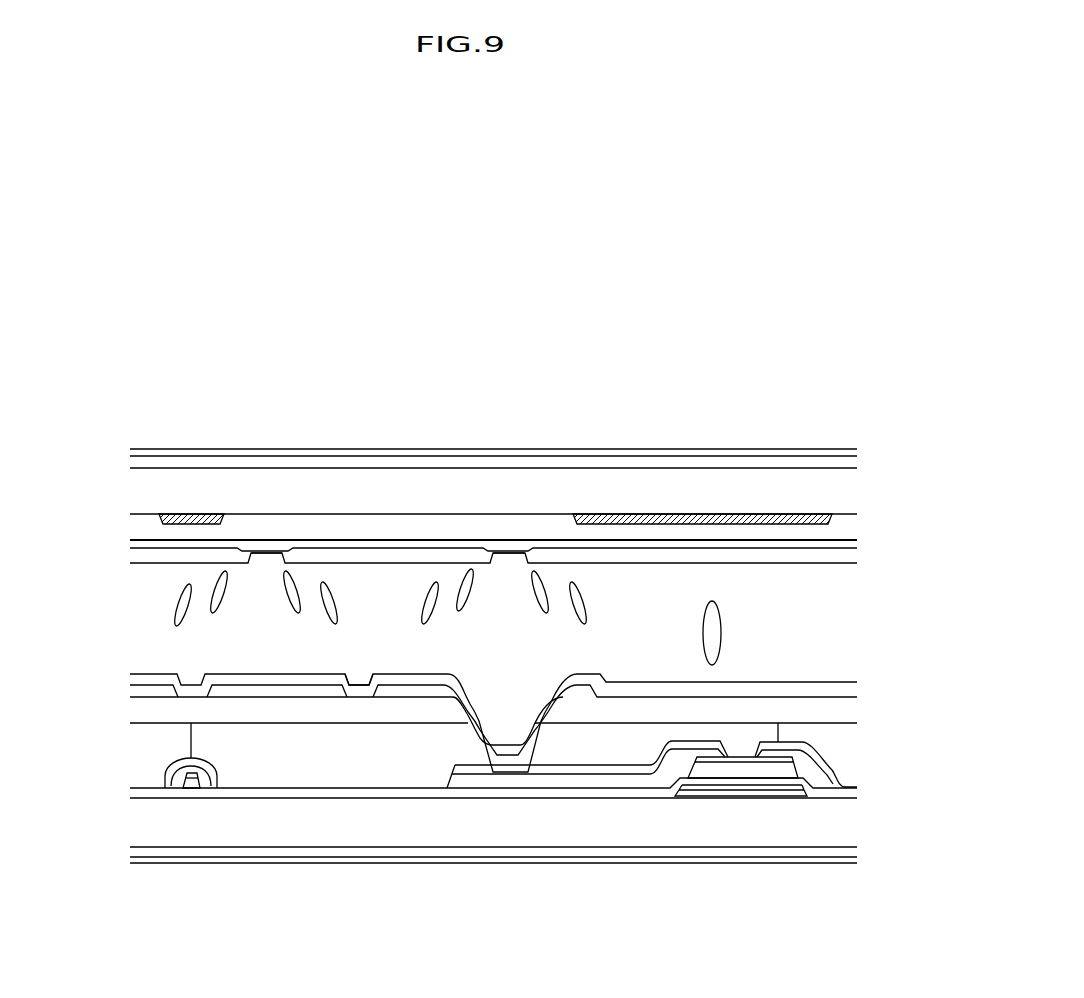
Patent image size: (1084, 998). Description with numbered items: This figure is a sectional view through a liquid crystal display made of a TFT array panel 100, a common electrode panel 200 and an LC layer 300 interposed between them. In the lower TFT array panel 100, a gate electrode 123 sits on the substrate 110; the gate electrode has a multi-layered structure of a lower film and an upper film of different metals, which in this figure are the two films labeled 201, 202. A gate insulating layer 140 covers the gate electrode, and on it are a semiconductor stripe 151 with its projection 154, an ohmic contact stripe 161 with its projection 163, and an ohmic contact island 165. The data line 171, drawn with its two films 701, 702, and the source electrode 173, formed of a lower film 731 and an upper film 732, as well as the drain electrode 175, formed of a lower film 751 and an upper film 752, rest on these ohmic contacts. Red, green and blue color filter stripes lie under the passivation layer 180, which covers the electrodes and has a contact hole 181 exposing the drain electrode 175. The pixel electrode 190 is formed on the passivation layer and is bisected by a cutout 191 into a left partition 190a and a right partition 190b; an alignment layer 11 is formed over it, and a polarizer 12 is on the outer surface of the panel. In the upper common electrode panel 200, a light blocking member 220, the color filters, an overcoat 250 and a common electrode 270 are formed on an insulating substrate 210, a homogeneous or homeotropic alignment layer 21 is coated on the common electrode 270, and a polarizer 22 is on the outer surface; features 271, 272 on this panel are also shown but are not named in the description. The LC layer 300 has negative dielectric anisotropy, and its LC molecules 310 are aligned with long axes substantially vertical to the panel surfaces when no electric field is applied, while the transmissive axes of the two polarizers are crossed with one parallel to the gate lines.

The alignment layer 11 is at (138, 682).
The polarizer 12 is at (808, 858).
The alignment layer 21 is at (138, 556).
The polarizer 22 is at (782, 452).
The TFT array panel 100 is at (504, 801).
The substrate 110 is at (313, 833).
The gate electrode 123 is at (741, 862).
The gate insulating layer 140 is at (345, 793).
The semiconductor stripe 151 is at (189, 783).
The projection 154 is at (720, 766).
The ohmic contact stripe 161 is at (198, 783).
The projection 163 is at (776, 760).
The ohmic contact island 165 is at (688, 779).
The data line 171 is at (183, 866).
The source electrode 173 is at (805, 709).
The drain electrode 175 is at (587, 709).
The passivation layer 180 is at (266, 783).
The contact hole 181 is at (515, 705).
The pixel electrode 190 is at (295, 829).
The left partition 190a is at (328, 693).
The right partition 190b is at (412, 693).
The cutout 191 is at (368, 674).
The common electrode panel 200 is at (501, 508).
The lower gate electrode layer 201 is at (718, 792).
The upper gate electrode layer 202 is at (762, 790).
The insulating substrate 210 is at (318, 468).
The light blocking member 220 is at (193, 518).
The overcoat 250 is at (765, 535).
The common electrode 270 is at (610, 543).
The spacer protrusion 271 is at (516, 566).
The spacer protrusion 272 is at (270, 566).
The LC layer 300 is at (486, 616).
The LC molecule 310 is at (172, 598).
The lower data line layer 701 is at (171, 784).
The upper data line layer 702 is at (212, 783).
The lower film 731 is at (835, 668).
The upper film 732 is at (805, 739).
The lower film 751 is at (622, 780).
The upper film 752 is at (670, 740).